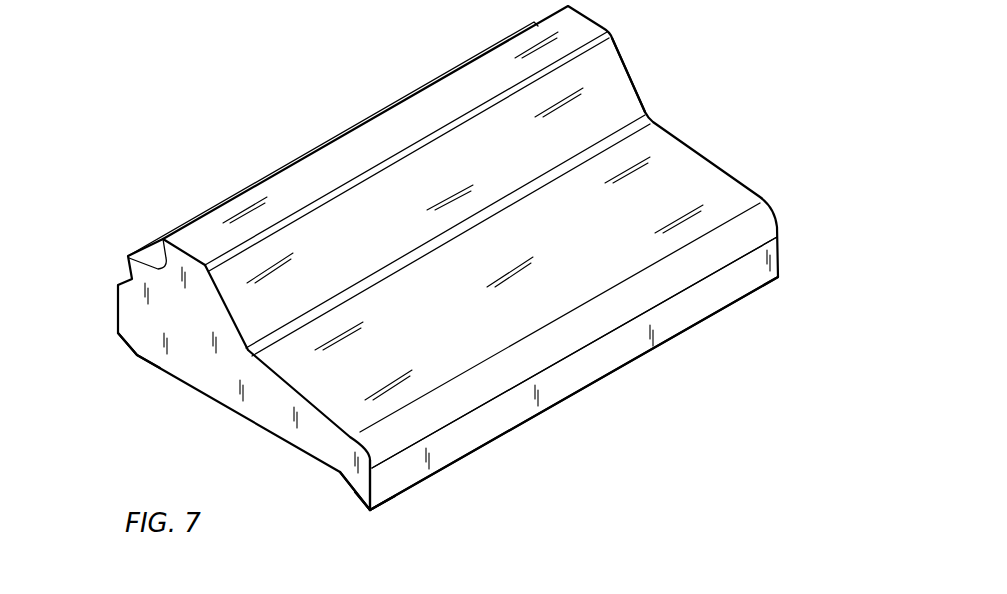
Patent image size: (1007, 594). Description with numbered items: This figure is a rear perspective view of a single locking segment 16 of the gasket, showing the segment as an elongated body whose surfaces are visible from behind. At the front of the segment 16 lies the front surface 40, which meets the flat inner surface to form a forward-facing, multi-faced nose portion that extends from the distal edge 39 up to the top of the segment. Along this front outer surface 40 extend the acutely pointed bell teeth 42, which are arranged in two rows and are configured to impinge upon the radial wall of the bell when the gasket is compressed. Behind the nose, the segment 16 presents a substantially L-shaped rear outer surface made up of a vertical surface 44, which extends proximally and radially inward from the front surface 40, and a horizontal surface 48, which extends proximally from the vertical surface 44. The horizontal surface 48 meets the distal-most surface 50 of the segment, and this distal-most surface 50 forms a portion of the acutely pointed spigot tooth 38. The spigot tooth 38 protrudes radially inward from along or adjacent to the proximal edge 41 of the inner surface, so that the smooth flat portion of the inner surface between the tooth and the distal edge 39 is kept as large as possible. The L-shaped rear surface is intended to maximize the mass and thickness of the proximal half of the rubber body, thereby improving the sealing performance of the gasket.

The segment 16 is at (155, 150).
The spigot tooth 38 is at (359, 497).
The distal edge 39 is at (135, 358).
The front surface 40 is at (412, 113).
The proximal edge 41 is at (370, 513).
The bell teeth 42 is at (147, 244).
The vertical surface 44 is at (636, 87).
The horizontal surface 48 is at (460, 325).
The distal-most surface 50 is at (585, 370).